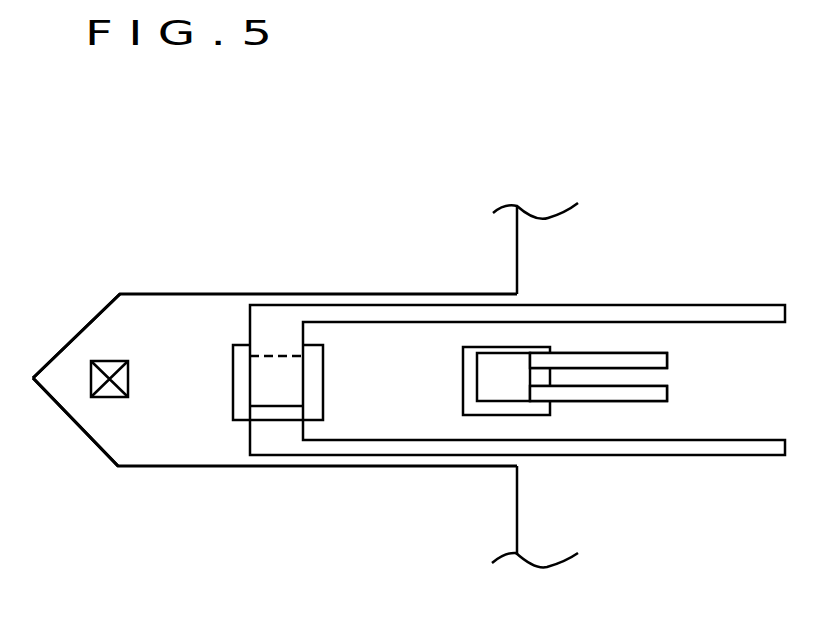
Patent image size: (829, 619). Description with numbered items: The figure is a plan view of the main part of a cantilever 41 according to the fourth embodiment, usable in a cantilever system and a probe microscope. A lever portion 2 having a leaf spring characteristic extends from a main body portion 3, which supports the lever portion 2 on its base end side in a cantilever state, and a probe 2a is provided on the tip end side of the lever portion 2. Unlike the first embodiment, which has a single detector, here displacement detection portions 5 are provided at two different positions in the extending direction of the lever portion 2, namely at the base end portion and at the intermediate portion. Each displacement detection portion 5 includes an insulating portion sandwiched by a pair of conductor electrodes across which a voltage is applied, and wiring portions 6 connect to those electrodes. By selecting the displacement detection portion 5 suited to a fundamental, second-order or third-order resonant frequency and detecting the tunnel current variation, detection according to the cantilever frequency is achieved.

The lever portion 2 is at (197, 294).
The probe 2a is at (104, 398).
The main body portion 3 is at (517, 245).
The displacement detection portion 5 is at (330, 358).
The wiring portions 6 is at (682, 305).
The cantilever 41 is at (175, 270).